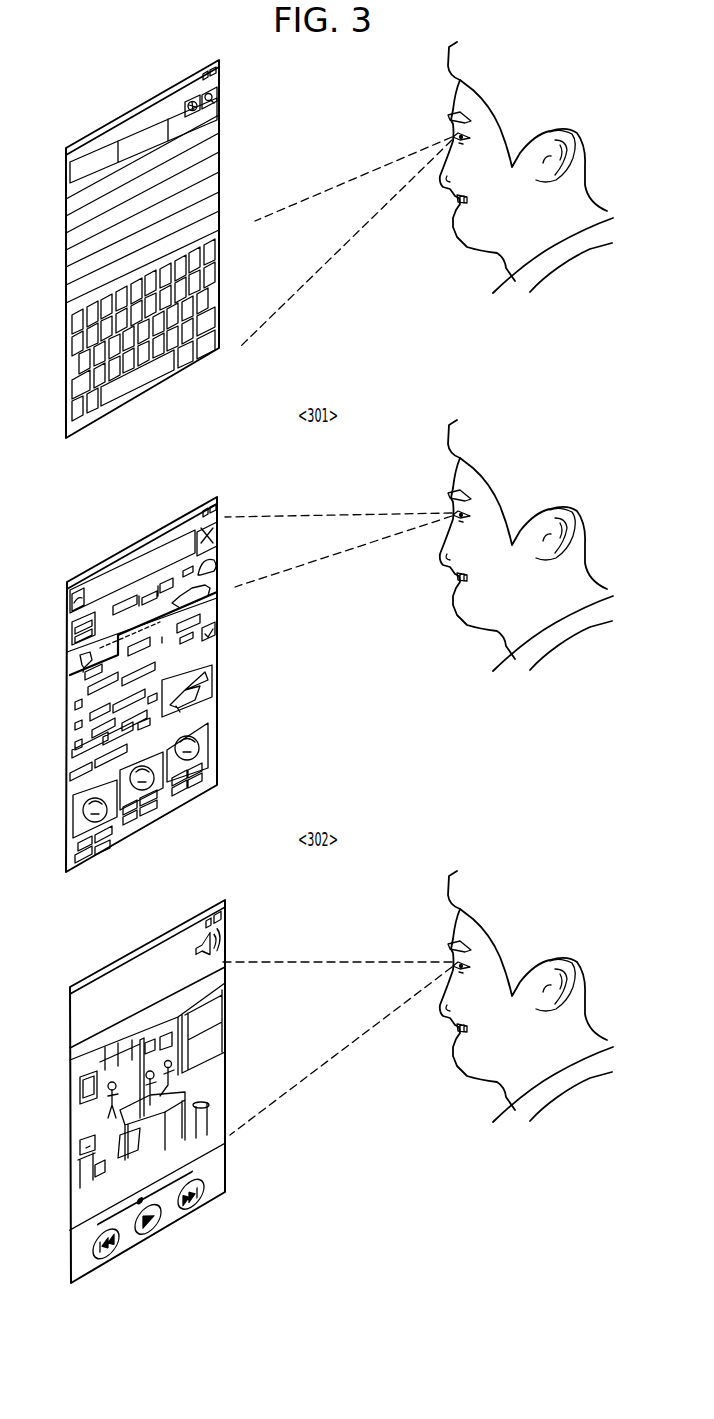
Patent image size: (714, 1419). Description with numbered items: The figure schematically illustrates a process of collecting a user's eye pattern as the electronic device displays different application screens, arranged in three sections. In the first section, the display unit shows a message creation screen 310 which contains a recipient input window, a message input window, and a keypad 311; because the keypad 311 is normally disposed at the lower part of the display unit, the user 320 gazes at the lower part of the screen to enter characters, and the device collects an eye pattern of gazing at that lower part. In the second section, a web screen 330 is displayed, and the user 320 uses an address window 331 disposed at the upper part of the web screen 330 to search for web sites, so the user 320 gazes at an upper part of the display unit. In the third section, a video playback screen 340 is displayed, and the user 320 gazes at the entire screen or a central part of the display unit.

The message creation screen 310 is at (117, 248).
The keypad 311 is at (70, 383).
The user 320 is at (453, 128).
The web screen 330 is at (117, 684).
The address window 331 is at (66, 619).
The video playback screen 340 is at (149, 939).